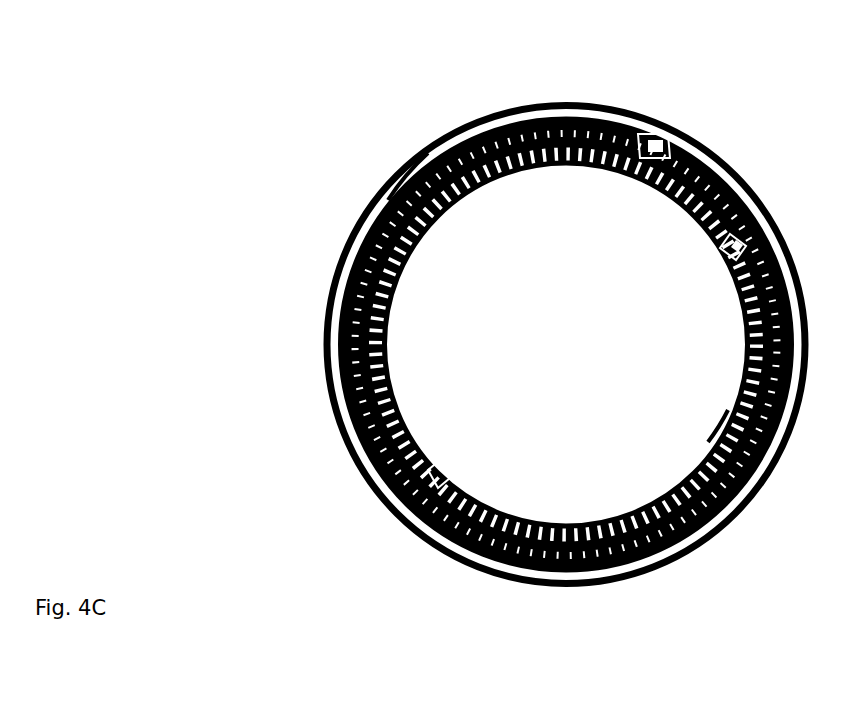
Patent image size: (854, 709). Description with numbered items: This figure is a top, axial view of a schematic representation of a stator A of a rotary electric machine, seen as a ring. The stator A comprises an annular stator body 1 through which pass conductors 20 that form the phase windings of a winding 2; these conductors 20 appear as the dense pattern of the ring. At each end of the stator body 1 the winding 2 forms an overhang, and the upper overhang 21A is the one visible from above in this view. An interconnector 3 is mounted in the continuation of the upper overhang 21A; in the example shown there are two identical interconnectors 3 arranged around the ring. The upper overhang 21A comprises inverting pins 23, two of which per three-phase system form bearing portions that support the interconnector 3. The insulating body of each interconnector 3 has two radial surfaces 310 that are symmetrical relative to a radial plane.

The stator body 1 is at (345, 456).
The winding 2 is at (401, 246).
The conductors 20 is at (720, 418).
The upper overhang 21A is at (397, 175).
The inverting pins 23 is at (565, 128).
The radial surfaces 310 is at (650, 130).
The interconnector 3 is at (725, 236).
The stator A is at (216, 247).